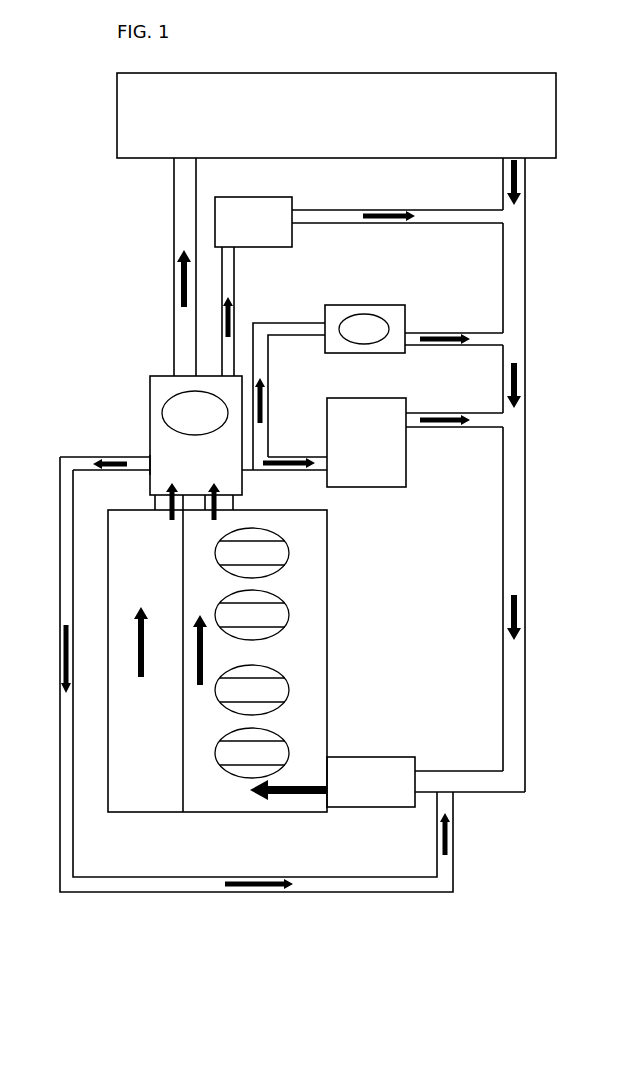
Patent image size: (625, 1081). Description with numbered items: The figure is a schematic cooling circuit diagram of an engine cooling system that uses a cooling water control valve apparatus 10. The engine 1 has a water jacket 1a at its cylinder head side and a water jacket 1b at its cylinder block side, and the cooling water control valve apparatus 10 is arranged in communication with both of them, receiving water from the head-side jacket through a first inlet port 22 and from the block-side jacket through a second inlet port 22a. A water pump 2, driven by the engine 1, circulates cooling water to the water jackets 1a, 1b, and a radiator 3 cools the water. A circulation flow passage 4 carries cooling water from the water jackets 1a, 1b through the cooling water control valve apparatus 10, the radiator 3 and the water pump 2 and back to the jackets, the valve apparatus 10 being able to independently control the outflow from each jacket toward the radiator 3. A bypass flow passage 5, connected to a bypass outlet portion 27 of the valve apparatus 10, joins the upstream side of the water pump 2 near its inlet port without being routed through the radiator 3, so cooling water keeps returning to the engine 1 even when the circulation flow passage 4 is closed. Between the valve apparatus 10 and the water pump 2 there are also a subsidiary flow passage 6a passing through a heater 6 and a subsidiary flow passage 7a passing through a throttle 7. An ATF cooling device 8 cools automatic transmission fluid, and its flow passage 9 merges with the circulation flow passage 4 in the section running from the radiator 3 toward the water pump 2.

The engine 1 is at (312, 763).
The water jacket at cylinder head side 1a is at (310, 692).
The water jacket at cylinder block side 1b is at (145, 806).
The water pump 2 is at (397, 808).
The radiator 3 is at (400, 82).
The circulation flow passage 4 is at (174, 278).
The bypass flow passage 5 is at (60, 737).
The heater 6 is at (390, 452).
The subsidiary flow passage 6a is at (282, 468).
The throttle 7 is at (400, 318).
The subsidiary flow passage 7a is at (268, 333).
The ATF cooling device 8 is at (222, 210).
The flow passage 9 is at (482, 222).
The cooling water control valve apparatus 10 is at (160, 390).
The first inlet port 22 is at (232, 488).
The second inlet port 22a is at (150, 472).
The bypass outlet portion 27 is at (163, 465).